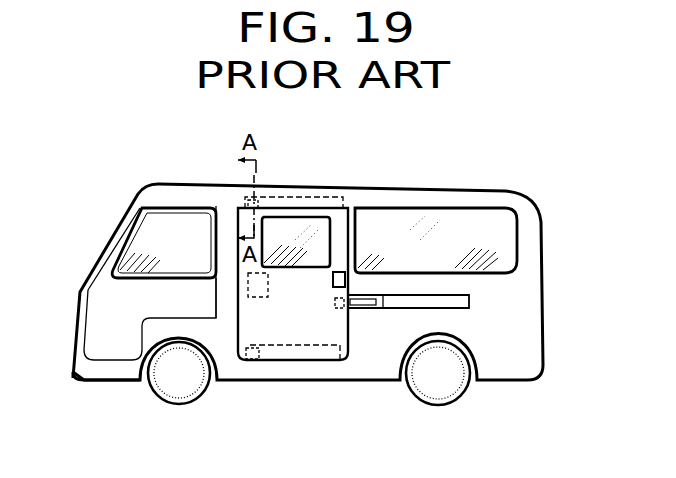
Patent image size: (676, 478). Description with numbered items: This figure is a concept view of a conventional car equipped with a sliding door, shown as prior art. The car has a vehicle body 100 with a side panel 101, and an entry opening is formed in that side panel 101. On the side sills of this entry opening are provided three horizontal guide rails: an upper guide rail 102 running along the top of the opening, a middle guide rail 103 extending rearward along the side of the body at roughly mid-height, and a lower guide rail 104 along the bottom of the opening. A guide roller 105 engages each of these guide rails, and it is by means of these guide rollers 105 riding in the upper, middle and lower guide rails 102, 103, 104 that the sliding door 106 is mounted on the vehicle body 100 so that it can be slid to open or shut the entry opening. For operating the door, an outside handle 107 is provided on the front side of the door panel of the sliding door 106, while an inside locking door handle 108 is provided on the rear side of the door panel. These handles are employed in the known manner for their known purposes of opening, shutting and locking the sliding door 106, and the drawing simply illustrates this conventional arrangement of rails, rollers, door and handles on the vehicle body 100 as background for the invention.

The vehicle body 100 is at (522, 200).
The side panel 101 is at (227, 368).
The upper guide rail 102 is at (325, 196).
The middle guide rail 103 is at (469, 302).
The lower guide rail 104 is at (330, 362).
The guide roller 105 is at (258, 204).
The sliding door 106 is at (270, 328).
The outside handle 107 is at (345, 273).
The inside locking door handle 108 is at (248, 289).